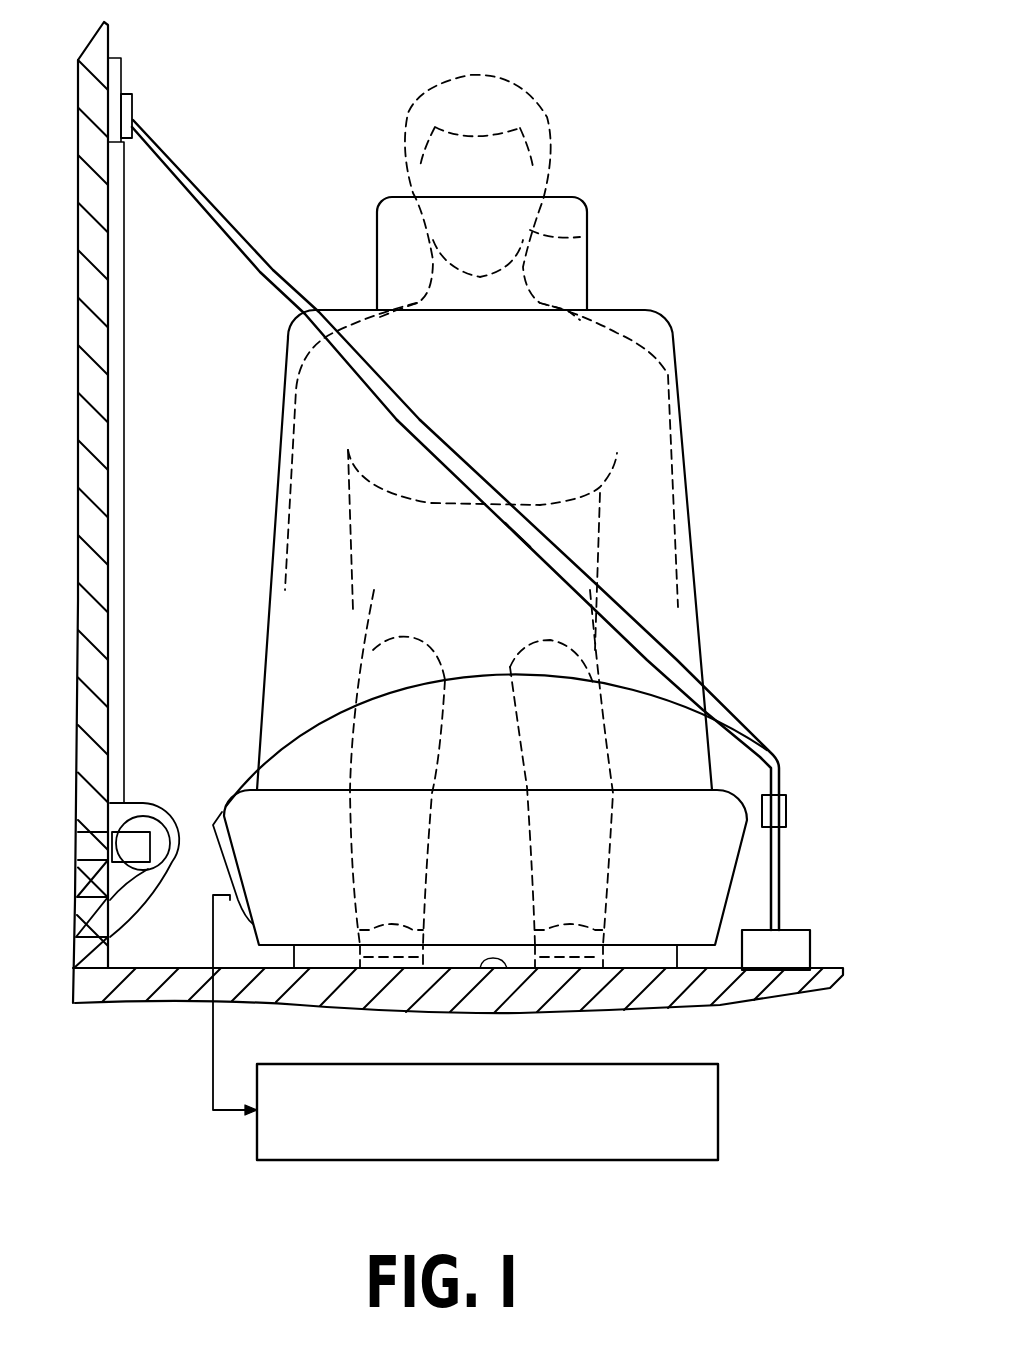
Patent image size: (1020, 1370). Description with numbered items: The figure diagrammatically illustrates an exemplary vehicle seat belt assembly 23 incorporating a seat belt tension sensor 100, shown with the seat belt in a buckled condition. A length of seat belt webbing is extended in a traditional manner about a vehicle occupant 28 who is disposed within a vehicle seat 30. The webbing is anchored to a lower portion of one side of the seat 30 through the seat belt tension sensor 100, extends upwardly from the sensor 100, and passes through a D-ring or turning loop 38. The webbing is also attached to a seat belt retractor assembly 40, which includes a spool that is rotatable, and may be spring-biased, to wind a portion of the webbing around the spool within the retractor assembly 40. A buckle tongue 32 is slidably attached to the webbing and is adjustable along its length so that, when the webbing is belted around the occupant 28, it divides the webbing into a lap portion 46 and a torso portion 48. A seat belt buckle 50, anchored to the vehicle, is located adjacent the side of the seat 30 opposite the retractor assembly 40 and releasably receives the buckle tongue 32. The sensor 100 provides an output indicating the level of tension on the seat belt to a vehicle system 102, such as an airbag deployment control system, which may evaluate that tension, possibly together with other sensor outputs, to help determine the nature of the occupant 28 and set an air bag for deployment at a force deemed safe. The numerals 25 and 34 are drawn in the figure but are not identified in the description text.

The seat belt assembly 23 is at (255, 246).
The lap belt portion 25 is at (605, 578).
The vehicle occupant 28 is at (592, 233).
The vehicle seat 30 is at (682, 390).
The buckle tongue 32 is at (779, 770).
The floor sensor 34 is at (493, 968).
The D-ring or turning loop 38 is at (132, 109).
The seat belt retractor assembly 40 is at (140, 803).
The lap portion 46 is at (488, 678).
The torso portion 48 is at (527, 524).
The seat belt buckle 50 is at (787, 809).
The seat belt tension sensor 100 is at (210, 868).
The vehicle system 102 is at (718, 1124).